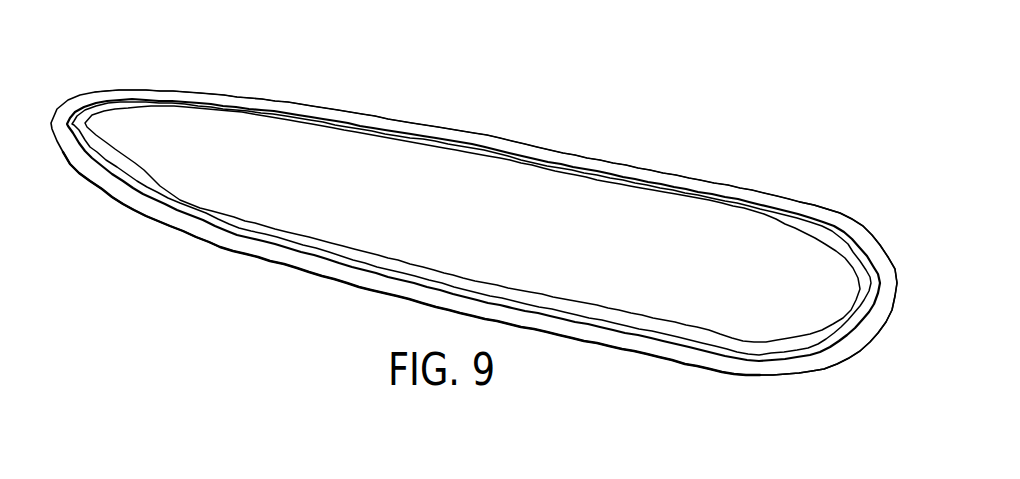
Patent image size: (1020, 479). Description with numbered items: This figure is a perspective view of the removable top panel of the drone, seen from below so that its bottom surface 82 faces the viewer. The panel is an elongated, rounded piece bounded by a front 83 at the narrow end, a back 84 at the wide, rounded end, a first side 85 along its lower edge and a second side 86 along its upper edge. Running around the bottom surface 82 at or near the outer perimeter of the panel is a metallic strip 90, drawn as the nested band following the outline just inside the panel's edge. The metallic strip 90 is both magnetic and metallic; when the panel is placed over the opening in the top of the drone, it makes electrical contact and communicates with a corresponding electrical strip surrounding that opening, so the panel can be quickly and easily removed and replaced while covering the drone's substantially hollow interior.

The bottom surface 82 is at (565, 190).
The front 83 is at (65, 113).
The back 84 is at (865, 343).
The first side 85 is at (223, 249).
The second side 86 is at (277, 101).
The metallic strip 90 is at (796, 208).